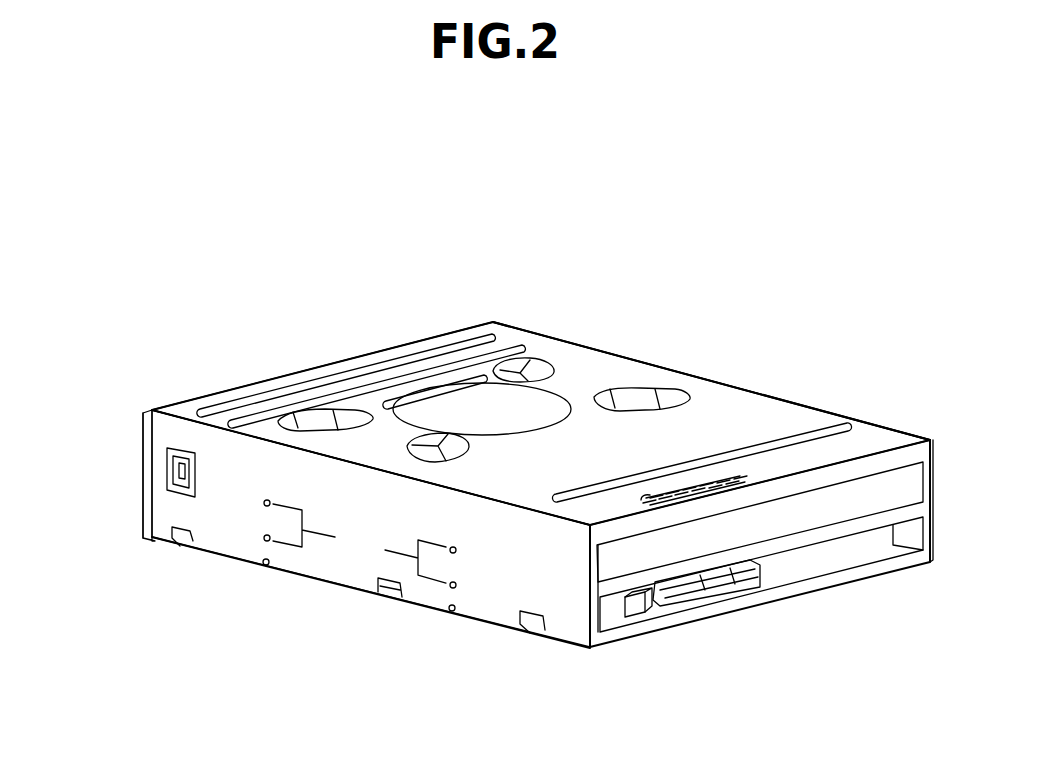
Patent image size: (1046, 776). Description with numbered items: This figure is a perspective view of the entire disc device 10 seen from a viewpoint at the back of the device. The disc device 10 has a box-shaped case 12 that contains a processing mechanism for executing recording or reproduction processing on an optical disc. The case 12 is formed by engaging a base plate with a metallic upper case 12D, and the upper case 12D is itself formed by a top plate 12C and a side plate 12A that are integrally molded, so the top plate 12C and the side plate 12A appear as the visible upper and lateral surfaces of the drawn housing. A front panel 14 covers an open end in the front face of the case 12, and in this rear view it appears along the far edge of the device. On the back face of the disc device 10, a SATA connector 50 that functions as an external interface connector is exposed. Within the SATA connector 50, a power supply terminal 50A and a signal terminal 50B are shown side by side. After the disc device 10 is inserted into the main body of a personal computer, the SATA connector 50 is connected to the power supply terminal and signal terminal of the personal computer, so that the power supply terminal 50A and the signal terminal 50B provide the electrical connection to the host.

The disc device 10 is at (722, 305).
The box-shaped case 12 is at (541, 423).
The side plate 12A is at (500, 600).
The top plate 12C is at (767, 413).
The metallic upper case 12D is at (573, 341).
The front panel 14 is at (150, 467).
The SATA connector 50 is at (713, 662).
The power supply terminal 50A is at (690, 612).
The signal terminal 50B is at (723, 632).